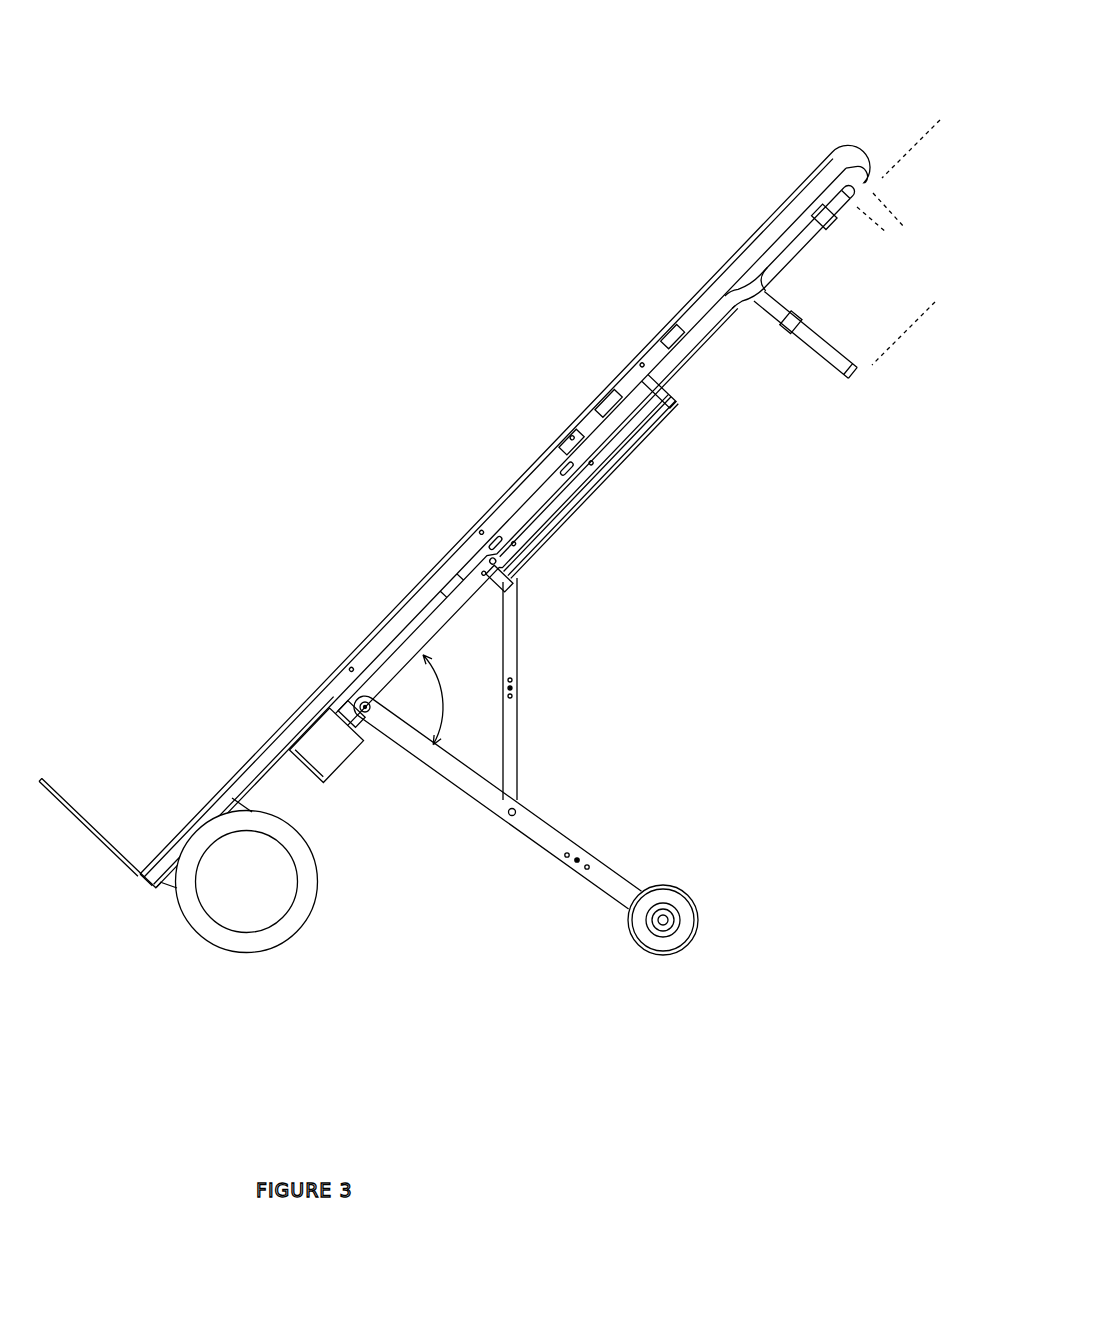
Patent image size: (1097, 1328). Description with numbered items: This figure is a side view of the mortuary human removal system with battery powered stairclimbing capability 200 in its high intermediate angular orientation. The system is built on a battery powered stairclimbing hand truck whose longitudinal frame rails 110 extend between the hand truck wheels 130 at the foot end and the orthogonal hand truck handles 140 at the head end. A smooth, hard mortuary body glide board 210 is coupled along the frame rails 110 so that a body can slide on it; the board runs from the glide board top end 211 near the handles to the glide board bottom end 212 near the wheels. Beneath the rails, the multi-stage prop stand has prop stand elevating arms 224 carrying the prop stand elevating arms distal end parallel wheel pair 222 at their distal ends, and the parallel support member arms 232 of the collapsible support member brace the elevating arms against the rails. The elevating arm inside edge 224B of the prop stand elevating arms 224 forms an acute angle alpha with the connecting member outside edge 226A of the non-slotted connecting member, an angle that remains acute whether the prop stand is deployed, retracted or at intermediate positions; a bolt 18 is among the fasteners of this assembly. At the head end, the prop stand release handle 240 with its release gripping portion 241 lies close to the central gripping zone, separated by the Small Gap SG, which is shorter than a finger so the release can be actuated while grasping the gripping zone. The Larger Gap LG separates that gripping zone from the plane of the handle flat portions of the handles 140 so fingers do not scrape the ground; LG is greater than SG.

The mortuary human removal system with battery powered stairclimbing capability 200 is at (306, 278).
The glide board top end 211 is at (802, 183).
The prop stand release handle 240 is at (836, 200).
The release gripping portion 241 is at (846, 193).
The mortuary body glide board 210 is at (676, 311).
The battery powered stairclimbing hand truck longitudinal frame rails 110 is at (281, 740).
The hand truck handles 140 is at (859, 327).
The glide board bottom end 212 is at (142, 867).
The connecting member outside edge 226A is at (447, 632).
The parallel support member arms 232 is at (508, 730).
The elevating arm inside edge 224B is at (480, 772).
The prop stand elevating arms 224 is at (543, 833).
The bolt 18 is at (368, 712).
The hand truck wheels 130 is at (303, 893).
The prop stand elevating arms distal end parallel wheel pair 222 is at (661, 935).
The Larger Gap LG is at (931, 197).
The Small Gap SG is at (895, 236).